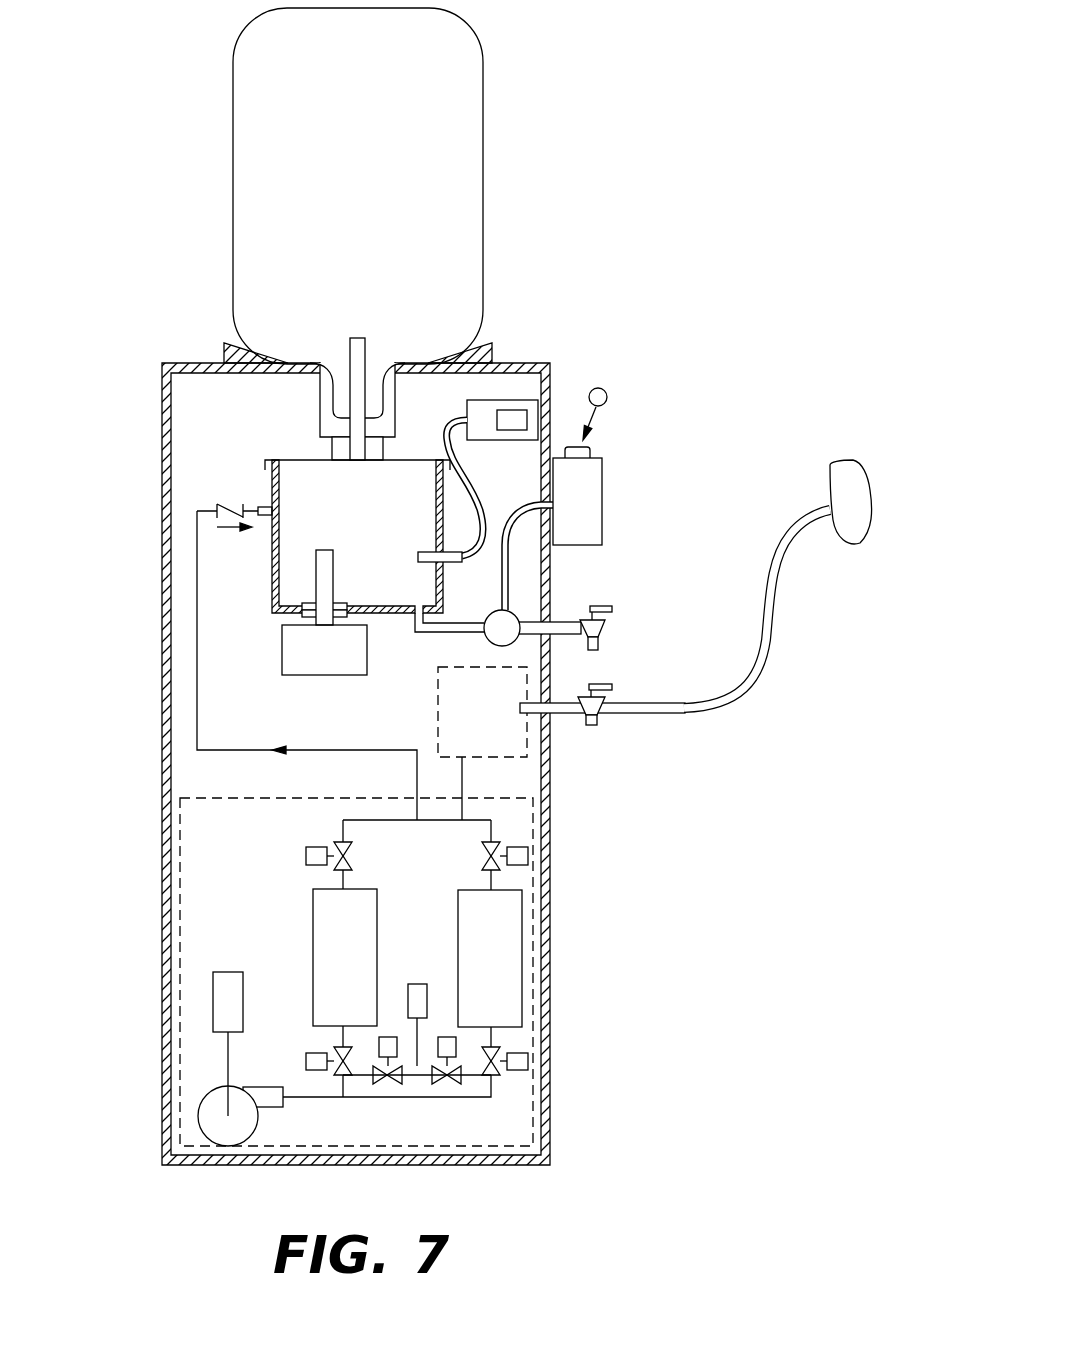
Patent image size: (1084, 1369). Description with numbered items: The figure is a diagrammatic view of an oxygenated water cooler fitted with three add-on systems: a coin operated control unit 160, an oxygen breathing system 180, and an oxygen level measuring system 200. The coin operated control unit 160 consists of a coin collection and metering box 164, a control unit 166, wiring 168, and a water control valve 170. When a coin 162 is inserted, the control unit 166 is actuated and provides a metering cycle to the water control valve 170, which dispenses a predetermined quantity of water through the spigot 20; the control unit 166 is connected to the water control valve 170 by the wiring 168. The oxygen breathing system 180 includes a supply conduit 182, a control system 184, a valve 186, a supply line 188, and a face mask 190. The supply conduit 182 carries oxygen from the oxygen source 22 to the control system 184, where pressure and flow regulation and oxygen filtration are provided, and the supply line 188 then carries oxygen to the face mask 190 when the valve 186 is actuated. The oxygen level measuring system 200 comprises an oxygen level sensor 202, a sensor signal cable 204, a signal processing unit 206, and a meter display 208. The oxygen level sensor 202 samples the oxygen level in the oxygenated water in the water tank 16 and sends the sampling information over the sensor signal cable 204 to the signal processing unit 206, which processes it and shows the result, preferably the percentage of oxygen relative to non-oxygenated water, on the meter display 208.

The water tank 16 is at (292, 482).
The spigot 20 is at (590, 631).
The oxygen source 22 is at (533, 840).
The coin operated control unit 160 is at (629, 457).
The coin 162 is at (607, 397).
The coin collection and metering box 164 is at (583, 450).
The control unit 166 is at (592, 521).
The wiring 168 is at (507, 585).
The water control valve 170 is at (510, 638).
The oxygen breathing system 180 is at (824, 549).
The supply conduit 182 is at (462, 780).
The control system 184 is at (528, 735).
The valve 186 is at (595, 722).
The supply line 188 is at (766, 656).
The face mask 190 is at (855, 523).
The oxygen level measuring system 200 is at (586, 327).
The oxygen level sensor 202 is at (430, 555).
The sensor signal cable 204 is at (470, 513).
The signal processing unit 206 is at (586, 350).
The meter display 208 is at (518, 418).